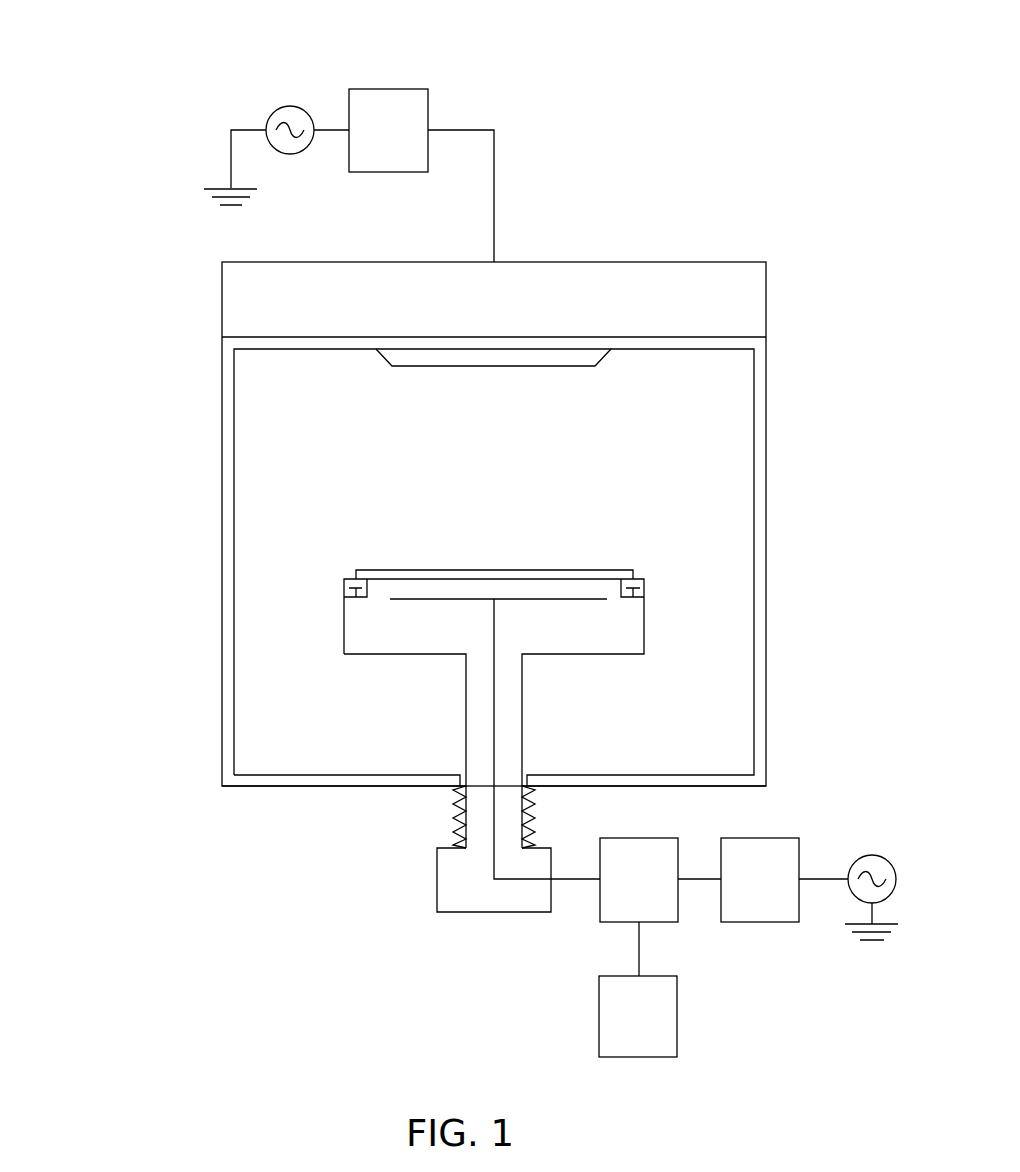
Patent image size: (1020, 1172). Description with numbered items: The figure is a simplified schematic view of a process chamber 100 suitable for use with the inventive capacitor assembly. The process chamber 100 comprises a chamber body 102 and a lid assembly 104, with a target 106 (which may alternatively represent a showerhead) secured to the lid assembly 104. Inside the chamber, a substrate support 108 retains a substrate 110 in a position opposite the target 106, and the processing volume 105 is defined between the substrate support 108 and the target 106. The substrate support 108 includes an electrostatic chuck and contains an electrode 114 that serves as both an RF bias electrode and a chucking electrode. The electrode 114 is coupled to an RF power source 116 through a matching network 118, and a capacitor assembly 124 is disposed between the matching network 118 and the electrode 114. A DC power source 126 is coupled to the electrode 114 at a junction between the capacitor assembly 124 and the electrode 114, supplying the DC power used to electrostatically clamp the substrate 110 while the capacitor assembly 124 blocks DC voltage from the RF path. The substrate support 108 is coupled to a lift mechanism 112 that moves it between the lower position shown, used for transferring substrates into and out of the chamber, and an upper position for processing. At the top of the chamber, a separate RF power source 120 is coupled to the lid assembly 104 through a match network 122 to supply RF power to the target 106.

The process chamber 100 is at (108, 328).
The chamber body 102 is at (222, 403).
The lid assembly 104 is at (222, 302).
The processing volume 105 is at (396, 447).
The target 106 is at (581, 367).
The substrate support 108 is at (322, 605).
The substrate 110 is at (537, 570).
The lift mechanism 112 is at (437, 870).
The electrode 114 is at (573, 599).
The RF power source 116 is at (870, 855).
The matching network 118 is at (741, 890).
The RF power source 120 is at (290, 105).
The match network 122 is at (369, 141).
The capacitor assembly 124 is at (620, 890).
The DC power source 126 is at (620, 1028).